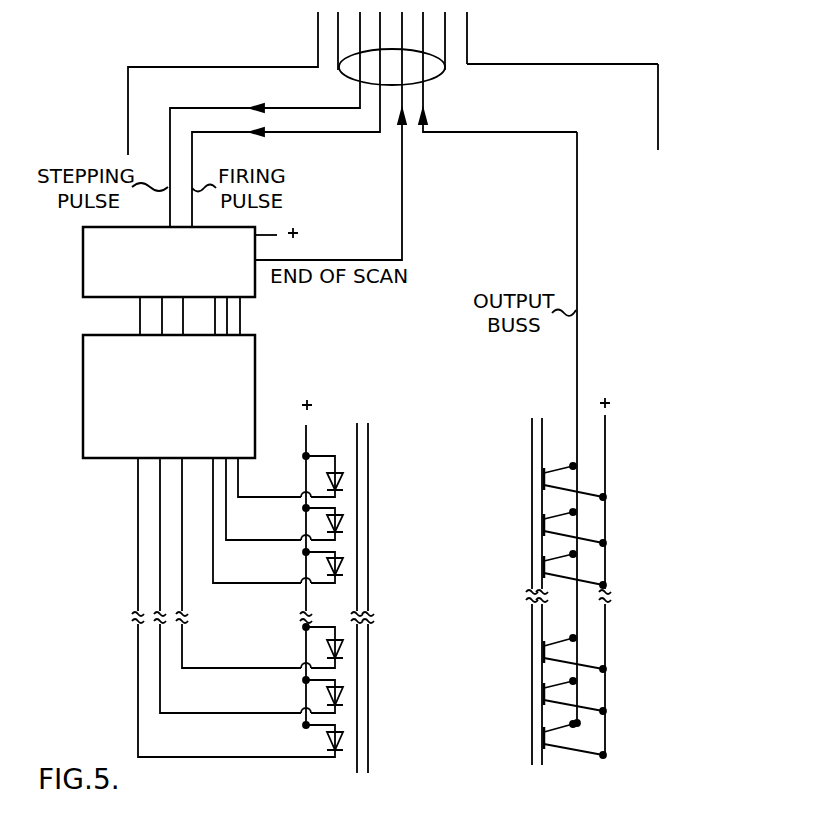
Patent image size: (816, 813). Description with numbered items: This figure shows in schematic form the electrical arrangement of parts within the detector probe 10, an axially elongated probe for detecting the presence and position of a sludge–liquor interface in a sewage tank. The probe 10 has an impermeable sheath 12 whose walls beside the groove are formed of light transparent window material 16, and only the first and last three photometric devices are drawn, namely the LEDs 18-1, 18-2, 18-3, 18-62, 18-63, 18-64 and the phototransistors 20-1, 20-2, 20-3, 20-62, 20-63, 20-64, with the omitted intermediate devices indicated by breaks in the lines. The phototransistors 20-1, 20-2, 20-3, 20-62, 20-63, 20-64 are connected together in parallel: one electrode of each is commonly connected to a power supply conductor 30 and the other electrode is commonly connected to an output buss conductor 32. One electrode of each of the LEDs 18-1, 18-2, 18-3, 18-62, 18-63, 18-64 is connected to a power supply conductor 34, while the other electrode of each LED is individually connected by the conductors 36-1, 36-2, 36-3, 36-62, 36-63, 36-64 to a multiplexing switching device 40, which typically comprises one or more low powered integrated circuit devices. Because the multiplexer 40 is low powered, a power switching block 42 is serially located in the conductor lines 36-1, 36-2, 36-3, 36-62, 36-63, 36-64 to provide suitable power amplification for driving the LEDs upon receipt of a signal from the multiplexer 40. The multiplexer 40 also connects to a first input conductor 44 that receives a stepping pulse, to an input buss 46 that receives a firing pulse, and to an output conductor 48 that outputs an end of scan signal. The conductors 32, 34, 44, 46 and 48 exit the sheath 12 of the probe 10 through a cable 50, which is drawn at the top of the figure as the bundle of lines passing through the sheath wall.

The detector probe 10 is at (620, 59).
The impermeable sheath 12 is at (658, 110).
The light transparent window material 16 is at (370, 431).
The LED 18-1 is at (345, 483).
The LED 18-2 is at (345, 527).
The LED 18-3 is at (345, 570).
The LED 18-62 is at (345, 650).
The LED 18-63 is at (345, 697).
The LED 18-64 is at (345, 742).
The phototransistor 20-1 is at (542, 480).
The phototransistor 20-2 is at (542, 529).
The phototransistor 20-3 is at (542, 572).
The phototransistor 20-62 is at (544, 652).
The phototransistor 20-63 is at (544, 697).
The phototransistor 20-64 is at (544, 742).
The power supply conductor 30 is at (607, 483).
The output buss conductor 32 is at (423, 89).
The power supply conductor 34 is at (312, 440).
The conductor 36-1 is at (240, 483).
The conductor 36-2 is at (228, 530).
The conductor 36-3 is at (215, 572).
The conductor 36-62 is at (182, 572).
The conductor 36-63 is at (162, 530).
The conductor 36-64 is at (138, 483).
The multiplexing switching device 40 is at (172, 285).
The power switching block 42 is at (182, 447).
The first input conductor 44 is at (186, 108).
The input buss 46 is at (347, 133).
The output conductor 48 is at (402, 206).
The cable 50 is at (445, 30).